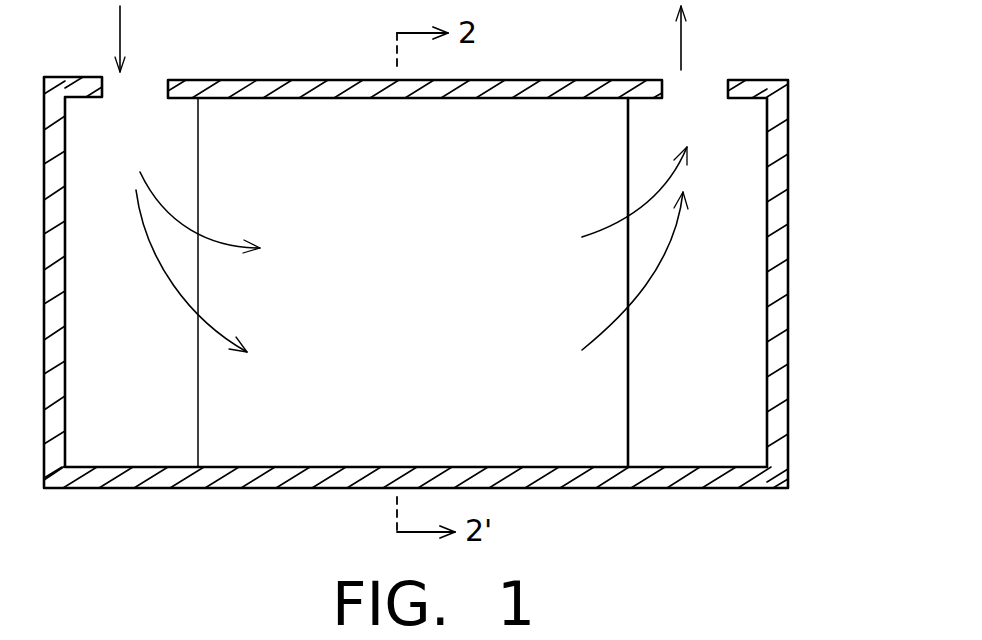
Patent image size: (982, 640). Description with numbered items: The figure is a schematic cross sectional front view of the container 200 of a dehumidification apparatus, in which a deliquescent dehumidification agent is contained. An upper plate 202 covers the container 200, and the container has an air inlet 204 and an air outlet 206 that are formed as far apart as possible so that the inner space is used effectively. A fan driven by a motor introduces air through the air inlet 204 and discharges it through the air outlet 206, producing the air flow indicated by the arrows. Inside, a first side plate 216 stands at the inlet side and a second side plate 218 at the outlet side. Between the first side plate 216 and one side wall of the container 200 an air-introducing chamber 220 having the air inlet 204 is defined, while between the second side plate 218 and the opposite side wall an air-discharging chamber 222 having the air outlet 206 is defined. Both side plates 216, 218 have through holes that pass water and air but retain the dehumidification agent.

The container 200 is at (777, 279).
The upper plate 202 is at (557, 92).
The air inlet 204 is at (153, 92).
The air outlet 206 is at (710, 92).
The first side plate 216 is at (198, 385).
The second side plate 218 is at (627, 378).
The air-introducing chamber 220 is at (152, 333).
The air-discharging chamber 222 is at (730, 333).